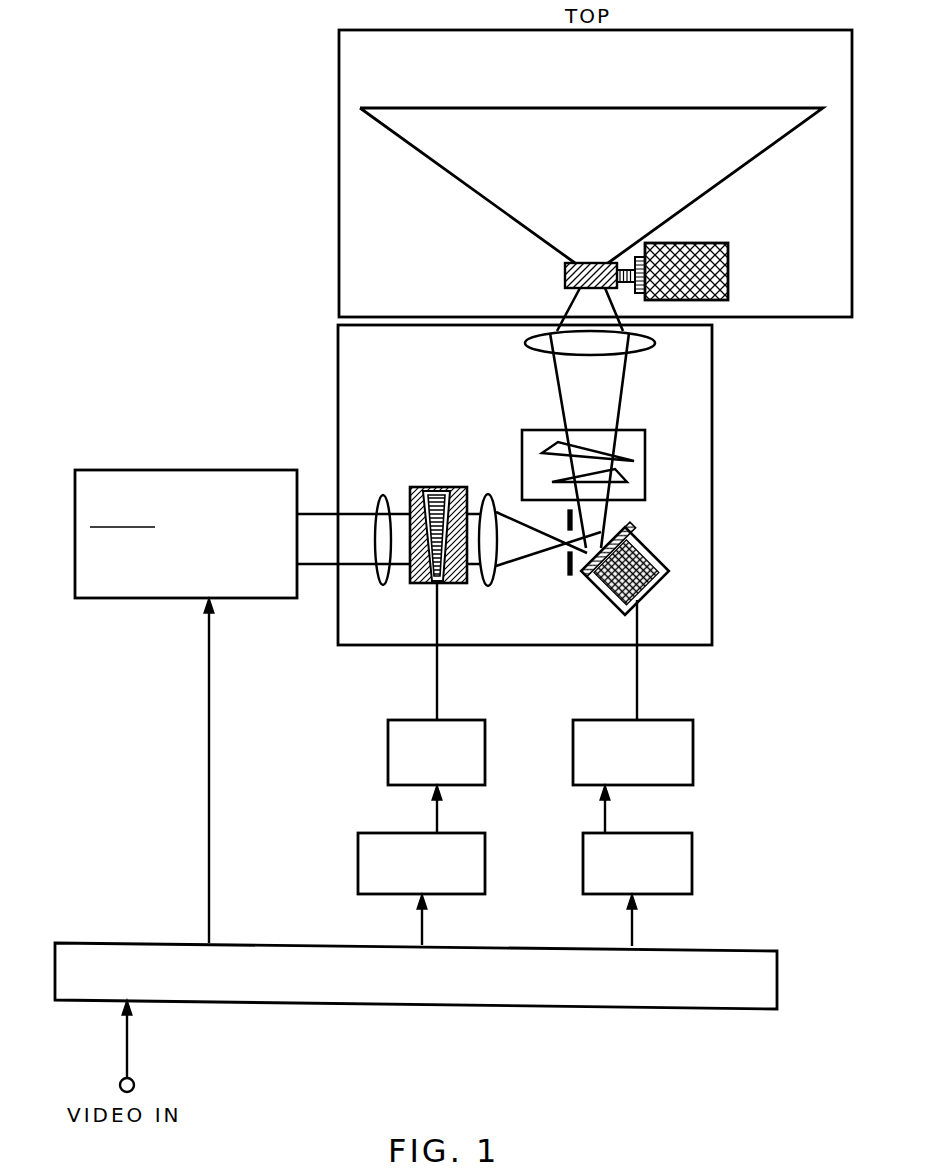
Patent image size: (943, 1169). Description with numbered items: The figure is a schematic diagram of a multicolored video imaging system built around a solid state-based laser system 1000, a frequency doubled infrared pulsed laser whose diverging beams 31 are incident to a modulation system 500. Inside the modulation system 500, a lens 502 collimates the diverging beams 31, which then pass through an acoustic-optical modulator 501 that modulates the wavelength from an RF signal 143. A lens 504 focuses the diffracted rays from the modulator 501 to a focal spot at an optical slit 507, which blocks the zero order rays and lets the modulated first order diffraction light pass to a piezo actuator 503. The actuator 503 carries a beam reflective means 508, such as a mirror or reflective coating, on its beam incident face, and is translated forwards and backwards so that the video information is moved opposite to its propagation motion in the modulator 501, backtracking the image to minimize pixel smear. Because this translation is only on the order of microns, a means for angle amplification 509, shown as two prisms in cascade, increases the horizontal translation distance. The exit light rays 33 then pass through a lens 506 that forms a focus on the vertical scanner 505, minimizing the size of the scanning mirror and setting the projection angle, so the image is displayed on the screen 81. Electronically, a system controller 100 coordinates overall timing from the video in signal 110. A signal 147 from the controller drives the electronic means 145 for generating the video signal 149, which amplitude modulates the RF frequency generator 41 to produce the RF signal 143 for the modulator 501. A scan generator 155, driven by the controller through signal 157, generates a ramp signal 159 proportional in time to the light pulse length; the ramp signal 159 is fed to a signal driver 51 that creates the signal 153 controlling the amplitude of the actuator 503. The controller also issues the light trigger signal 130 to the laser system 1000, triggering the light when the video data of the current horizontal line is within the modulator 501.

The screen 81 is at (339, 296).
The vertical scanner 505 is at (728, 297).
The modulation system 500 is at (412, 422).
The light rays 33 is at (553, 379).
The lens 506 is at (650, 347).
The means for angle amplification 509 is at (624, 430).
The solid state-based laser system 1000 is at (186, 534).
The diverging beams 31 is at (358, 511).
The lens 502 is at (389, 587).
The lens 504 is at (493, 588).
The acoustic-optical modulator 501 is at (432, 490).
The optical slit 507 is at (566, 574).
The piezo actuator 503 is at (650, 590).
The beam reflective means 508 is at (602, 543).
The RF signal 143 is at (439, 694).
The signal 153 is at (639, 694).
The RF frequency generator 41 is at (388, 737).
The signal driver 51 is at (694, 737).
The electronic means for generating the video signal 145 is at (378, 833).
The scan generator 155 is at (693, 843).
The video signal 149 is at (438, 806).
The ramp signal 159 is at (606, 806).
The signal 147 is at (423, 926).
The controller output line to signal generator 157 is at (634, 929).
The light trigger signal 130 is at (182, 770).
The system controller 100 is at (105, 943).
The video in signal 110 is at (125, 1044).